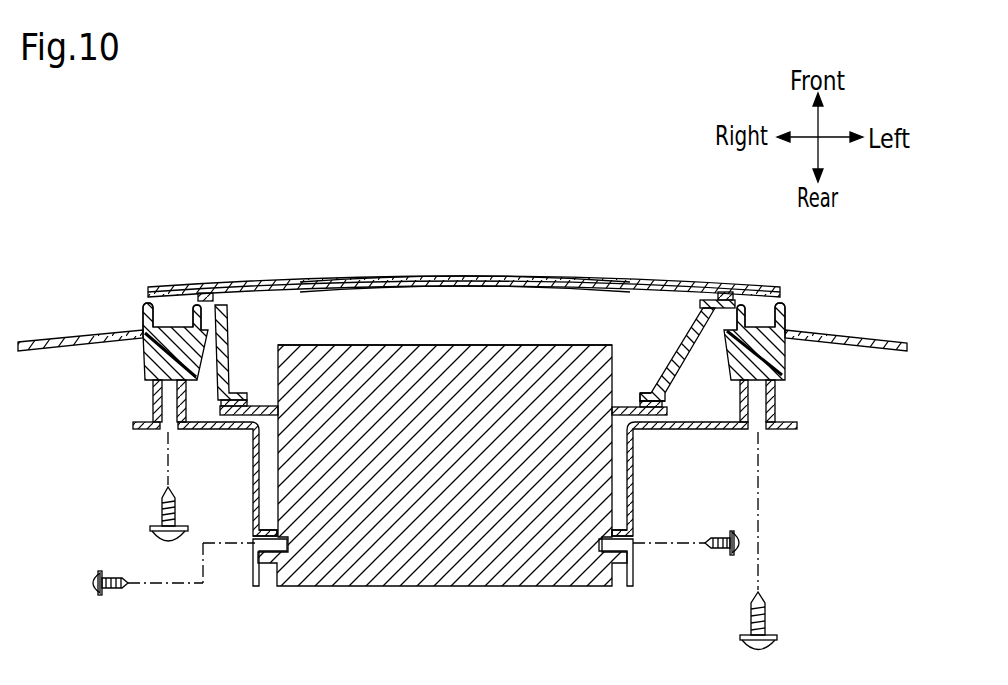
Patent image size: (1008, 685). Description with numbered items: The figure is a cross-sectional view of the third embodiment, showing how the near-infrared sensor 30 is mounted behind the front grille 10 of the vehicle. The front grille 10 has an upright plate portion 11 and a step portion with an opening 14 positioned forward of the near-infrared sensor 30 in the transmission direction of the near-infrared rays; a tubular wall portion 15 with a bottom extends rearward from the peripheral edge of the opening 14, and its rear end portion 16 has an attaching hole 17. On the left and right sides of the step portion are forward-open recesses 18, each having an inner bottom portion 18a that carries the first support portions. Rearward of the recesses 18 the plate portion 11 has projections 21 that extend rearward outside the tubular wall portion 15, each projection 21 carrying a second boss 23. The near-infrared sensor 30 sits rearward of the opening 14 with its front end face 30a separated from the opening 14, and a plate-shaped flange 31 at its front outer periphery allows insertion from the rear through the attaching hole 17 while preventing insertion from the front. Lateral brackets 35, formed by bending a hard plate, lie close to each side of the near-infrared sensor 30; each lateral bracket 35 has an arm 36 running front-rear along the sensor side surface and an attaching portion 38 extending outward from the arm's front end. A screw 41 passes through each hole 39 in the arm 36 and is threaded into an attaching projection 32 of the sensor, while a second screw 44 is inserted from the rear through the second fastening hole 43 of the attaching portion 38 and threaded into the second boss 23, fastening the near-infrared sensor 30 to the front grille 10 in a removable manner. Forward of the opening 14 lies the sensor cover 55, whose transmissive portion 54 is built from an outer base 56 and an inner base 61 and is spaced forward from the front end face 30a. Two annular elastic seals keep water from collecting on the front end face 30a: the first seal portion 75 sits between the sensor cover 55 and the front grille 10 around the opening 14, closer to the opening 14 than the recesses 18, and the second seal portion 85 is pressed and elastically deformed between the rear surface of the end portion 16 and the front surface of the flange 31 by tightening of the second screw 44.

The front grille 10 is at (462, 315).
The plate portion 11 is at (70, 334).
The opening 14 is at (700, 300).
The tubular wall portion 15 is at (692, 340).
The end portion 16 is at (653, 393).
The attaching hole 17 is at (236, 392).
The recess 18 is at (163, 315).
The inner bottom portion 18a is at (194, 318).
The projection 21 is at (150, 360).
The second boss 23 is at (153, 403).
The near-infrared sensor 30 is at (428, 362).
The front end face 30a is at (538, 345).
The flange 31 is at (668, 412).
The attaching projection 32 is at (262, 526).
The lateral bracket 35 is at (463, 479).
The arm 36 is at (253, 469).
The attaching portion 38 is at (133, 427).
The hole 39 is at (253, 550).
The screw 41 is at (110, 596).
The second fastening hole 43 is at (163, 433).
The second screw 44 is at (158, 511).
The transmissive portion 54 is at (554, 279).
The sensor cover 55 is at (464, 261).
The outer base 56 is at (468, 277).
The inner base 61 is at (476, 289).
The first seal portion 75 is at (216, 298).
The second seal portion 85 is at (250, 402).